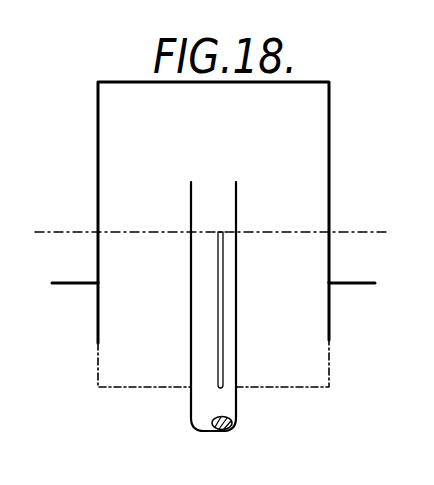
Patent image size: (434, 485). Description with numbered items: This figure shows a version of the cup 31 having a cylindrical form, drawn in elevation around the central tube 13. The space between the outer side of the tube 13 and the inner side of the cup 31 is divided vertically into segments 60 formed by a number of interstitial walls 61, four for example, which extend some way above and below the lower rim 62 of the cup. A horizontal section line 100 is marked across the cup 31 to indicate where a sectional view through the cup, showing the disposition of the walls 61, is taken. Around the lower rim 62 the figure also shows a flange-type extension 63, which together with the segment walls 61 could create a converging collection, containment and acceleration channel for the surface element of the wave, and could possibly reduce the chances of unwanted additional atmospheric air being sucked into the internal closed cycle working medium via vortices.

The cup 31 is at (314, 100).
The section line 100 is at (73, 205).
The segments 60 is at (135, 305).
The interstitial walls 61 is at (223, 268).
The lower rim 62 is at (330, 313).
The flange-type extension 63 is at (330, 386).
The tube 13 is at (232, 408).